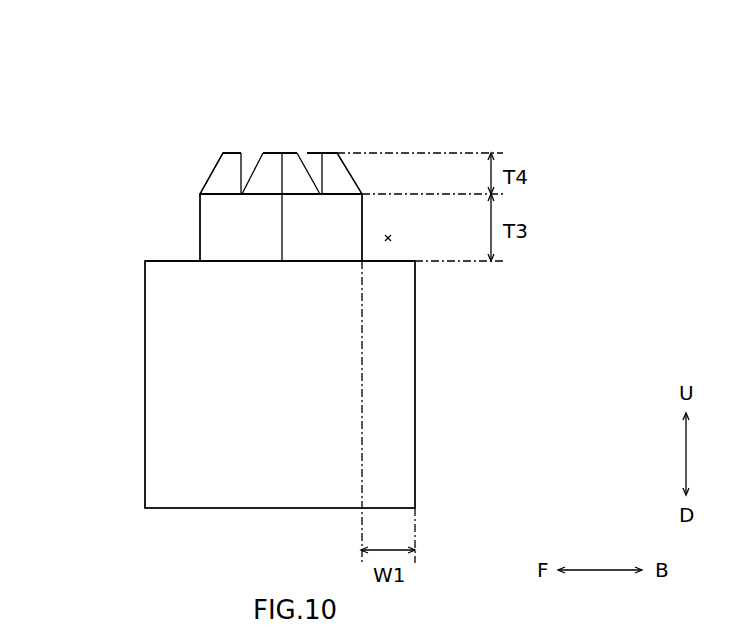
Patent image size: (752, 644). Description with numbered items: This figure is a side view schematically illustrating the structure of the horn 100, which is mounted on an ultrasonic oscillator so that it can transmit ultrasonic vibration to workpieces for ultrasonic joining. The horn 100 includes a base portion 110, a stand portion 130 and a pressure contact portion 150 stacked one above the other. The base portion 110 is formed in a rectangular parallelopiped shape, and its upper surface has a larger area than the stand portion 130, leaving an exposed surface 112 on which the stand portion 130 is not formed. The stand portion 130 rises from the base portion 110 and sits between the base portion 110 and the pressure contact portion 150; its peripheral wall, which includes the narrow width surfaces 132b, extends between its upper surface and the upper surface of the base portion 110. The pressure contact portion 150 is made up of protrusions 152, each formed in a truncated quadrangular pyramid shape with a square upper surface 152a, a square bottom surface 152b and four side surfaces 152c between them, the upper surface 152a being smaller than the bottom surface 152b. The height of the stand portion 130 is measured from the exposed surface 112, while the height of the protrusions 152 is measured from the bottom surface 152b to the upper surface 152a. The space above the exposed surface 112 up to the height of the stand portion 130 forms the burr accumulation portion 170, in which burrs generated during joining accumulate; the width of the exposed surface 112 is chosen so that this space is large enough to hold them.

The horn 100 is at (68, 92).
The base portion 110 is at (144, 378).
The exposed surface 112 is at (163, 260).
The stand portion 130 is at (198, 212).
The narrow width surfaces 132b is at (320, 230).
The pressure contact portion 150 is at (210, 177).
The protrusions 152 is at (222, 152).
The upper surface 152a is at (288, 152).
The bottom surface 152b is at (305, 194).
The side surfaces 152c is at (267, 170).
The burr accumulation portion 170 is at (390, 245).